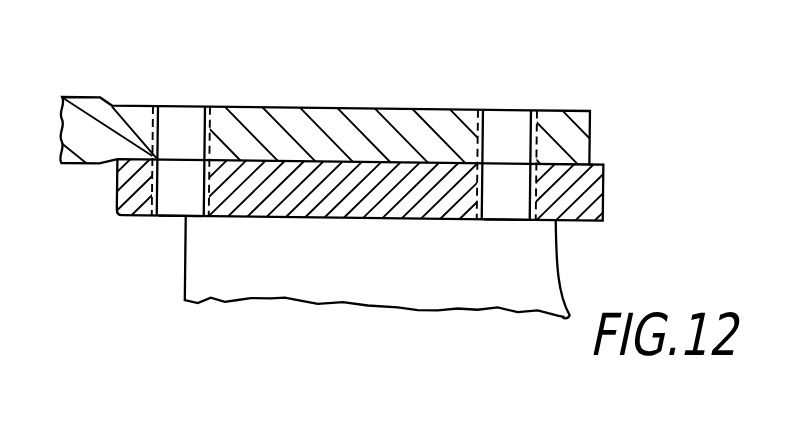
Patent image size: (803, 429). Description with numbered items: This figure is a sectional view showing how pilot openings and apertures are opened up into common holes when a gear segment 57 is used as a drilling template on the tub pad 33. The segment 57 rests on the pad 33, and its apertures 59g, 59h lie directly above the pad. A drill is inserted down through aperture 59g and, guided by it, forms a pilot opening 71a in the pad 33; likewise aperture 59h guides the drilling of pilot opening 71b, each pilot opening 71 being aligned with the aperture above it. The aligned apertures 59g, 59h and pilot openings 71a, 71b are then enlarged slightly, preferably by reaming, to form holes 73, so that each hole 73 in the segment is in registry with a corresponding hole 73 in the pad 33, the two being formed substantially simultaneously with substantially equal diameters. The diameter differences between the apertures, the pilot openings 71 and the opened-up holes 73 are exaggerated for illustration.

The tub pad 33 is at (375, 188).
The cover plate 57 is at (356, 100).
The aperture 59g is at (150, 116).
The aperture 59h is at (490, 123).
The hole 73 is at (398, 153).
The pilot opening 71 is at (310, 267).
The pilot opening 71a is at (148, 265).
The pilot opening 71b is at (580, 250).